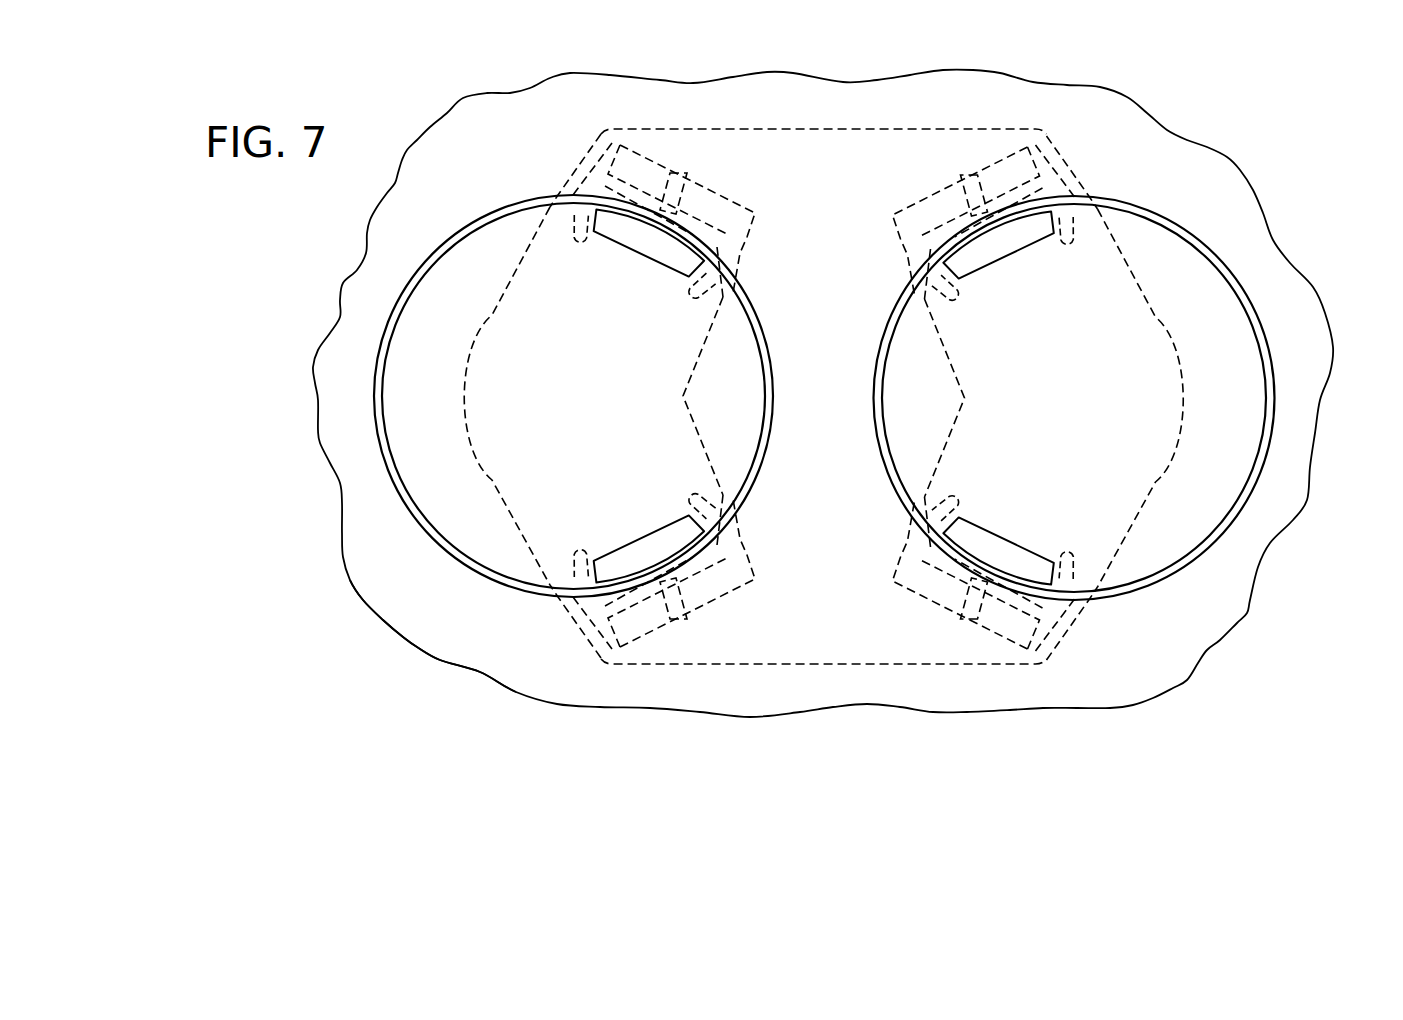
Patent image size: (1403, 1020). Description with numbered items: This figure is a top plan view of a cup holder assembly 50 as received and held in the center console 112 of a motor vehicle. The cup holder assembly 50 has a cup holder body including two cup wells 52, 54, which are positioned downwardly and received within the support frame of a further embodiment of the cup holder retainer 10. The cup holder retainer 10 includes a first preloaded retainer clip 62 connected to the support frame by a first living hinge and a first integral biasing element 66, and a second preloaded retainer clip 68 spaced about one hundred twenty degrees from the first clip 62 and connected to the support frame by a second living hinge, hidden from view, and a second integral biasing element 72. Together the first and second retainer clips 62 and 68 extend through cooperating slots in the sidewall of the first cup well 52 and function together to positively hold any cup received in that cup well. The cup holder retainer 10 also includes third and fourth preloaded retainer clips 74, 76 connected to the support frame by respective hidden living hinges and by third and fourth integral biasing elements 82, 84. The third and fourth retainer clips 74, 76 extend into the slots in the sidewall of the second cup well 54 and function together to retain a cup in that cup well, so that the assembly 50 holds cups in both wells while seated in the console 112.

The cup holder retainer 10 is at (621, 727).
The cup holder assembly 50 is at (1222, 110).
The first cup well 52 is at (1223, 262).
The second cup well 54 is at (377, 342).
The first preloaded retainer clip 62 is at (998, 550).
The first integral biasing element 66 is at (963, 619).
The second preloaded retainer clip 68 is at (1003, 242).
The second integral biasing element 72 is at (961, 175).
The third preloaded retainer clip 74 is at (640, 240).
The fourth preloaded retainer clip 76 is at (645, 547).
The third integral biasing element 82 is at (688, 173).
The fourth integral biasing element 84 is at (688, 619).
The center console 112 is at (405, 645).